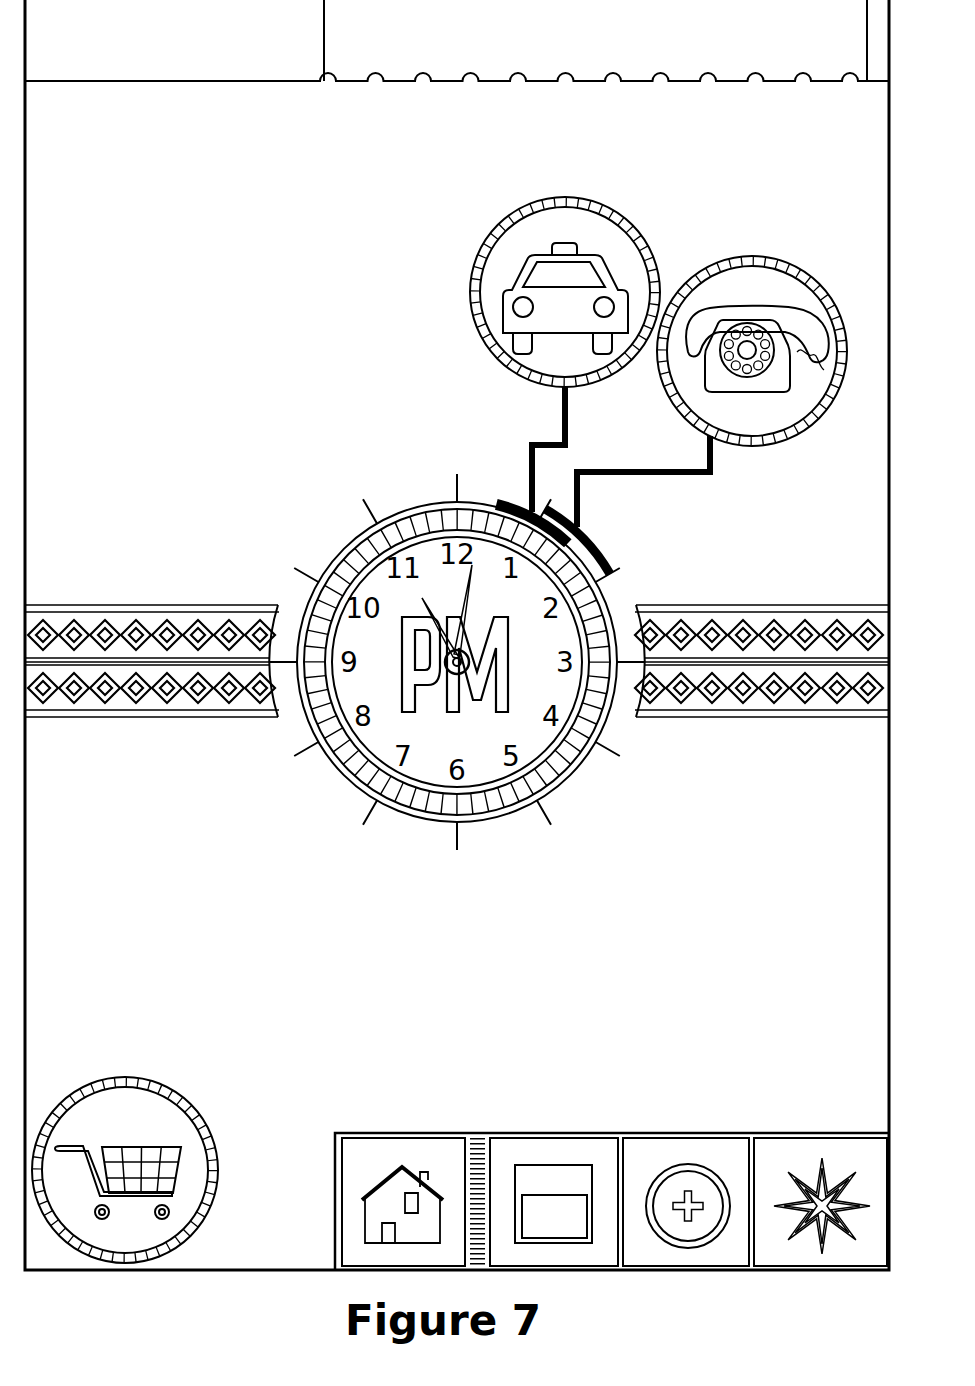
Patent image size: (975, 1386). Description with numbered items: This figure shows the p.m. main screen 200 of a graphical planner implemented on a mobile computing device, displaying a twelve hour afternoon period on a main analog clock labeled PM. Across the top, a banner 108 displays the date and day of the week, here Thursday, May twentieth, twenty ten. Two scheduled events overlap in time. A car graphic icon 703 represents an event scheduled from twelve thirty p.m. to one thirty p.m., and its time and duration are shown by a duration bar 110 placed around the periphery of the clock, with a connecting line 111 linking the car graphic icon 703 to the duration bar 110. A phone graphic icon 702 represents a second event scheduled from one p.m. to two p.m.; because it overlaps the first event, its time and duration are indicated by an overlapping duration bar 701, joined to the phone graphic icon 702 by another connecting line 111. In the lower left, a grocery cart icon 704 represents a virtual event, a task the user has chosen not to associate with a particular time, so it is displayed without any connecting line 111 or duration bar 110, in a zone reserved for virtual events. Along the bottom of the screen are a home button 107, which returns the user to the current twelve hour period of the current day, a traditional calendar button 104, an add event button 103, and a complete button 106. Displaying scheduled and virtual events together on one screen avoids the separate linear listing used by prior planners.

The p.m. main screen 200 is at (200, 262).
The banner 108 is at (528, 53).
The duration bar 110 is at (512, 500).
The overlapping duration bar 701 is at (590, 537).
The connecting line 111 is at (562, 415).
The car graphic icon 703 is at (495, 270).
The phone graphic icon 702 is at (767, 282).
The grocery cart icon 704 is at (127, 1135).
The home button 107 is at (405, 1157).
The traditional calendar button 104 is at (555, 1157).
The add event button 103 is at (683, 1157).
The complete button 106 is at (825, 1157).